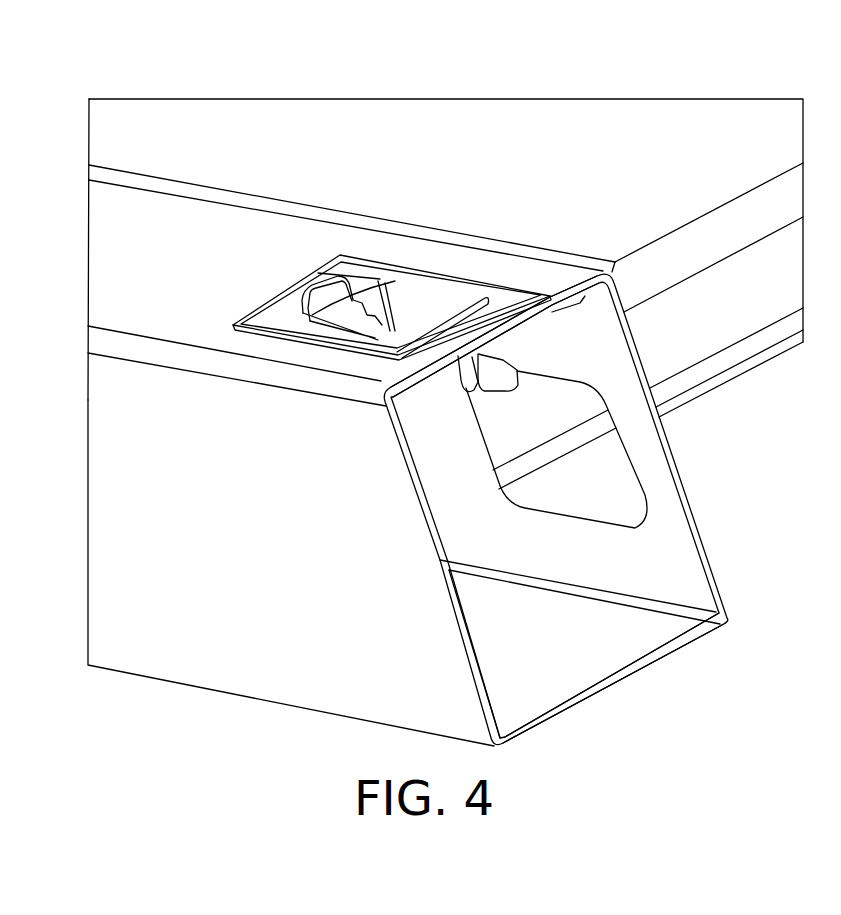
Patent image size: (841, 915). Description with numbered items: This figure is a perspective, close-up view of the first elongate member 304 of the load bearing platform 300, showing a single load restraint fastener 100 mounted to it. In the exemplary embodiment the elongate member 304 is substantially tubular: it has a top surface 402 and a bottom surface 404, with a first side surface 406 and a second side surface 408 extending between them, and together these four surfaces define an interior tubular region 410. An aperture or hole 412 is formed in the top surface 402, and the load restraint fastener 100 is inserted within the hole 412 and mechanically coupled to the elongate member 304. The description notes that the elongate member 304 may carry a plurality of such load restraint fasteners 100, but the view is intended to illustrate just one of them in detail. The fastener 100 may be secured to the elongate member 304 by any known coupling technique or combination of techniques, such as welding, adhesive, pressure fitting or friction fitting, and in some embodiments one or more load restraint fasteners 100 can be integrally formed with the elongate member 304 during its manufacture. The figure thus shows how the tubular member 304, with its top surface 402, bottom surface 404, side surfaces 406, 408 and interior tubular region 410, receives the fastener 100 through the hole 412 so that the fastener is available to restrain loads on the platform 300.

The load restraint fastener 100 is at (267, 303).
The load bearing platform 300 is at (549, 70).
The first elongate member 304 is at (143, 676).
The top surface 402 is at (557, 277).
The bottom surface 404 is at (687, 652).
The first side surface 406 is at (451, 605).
The second side surface 408 is at (684, 481).
The interior tubular region 410 is at (548, 672).
The hole 412 is at (358, 253).